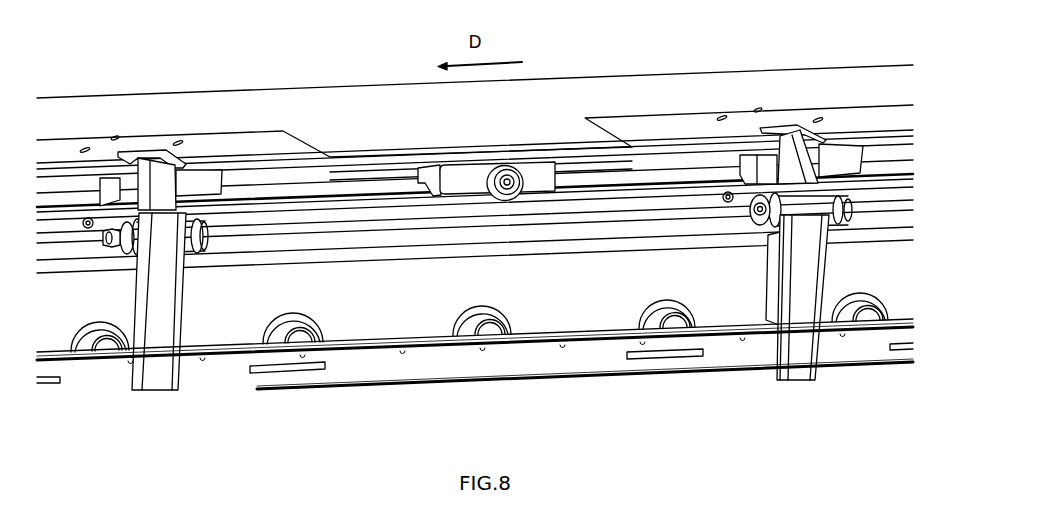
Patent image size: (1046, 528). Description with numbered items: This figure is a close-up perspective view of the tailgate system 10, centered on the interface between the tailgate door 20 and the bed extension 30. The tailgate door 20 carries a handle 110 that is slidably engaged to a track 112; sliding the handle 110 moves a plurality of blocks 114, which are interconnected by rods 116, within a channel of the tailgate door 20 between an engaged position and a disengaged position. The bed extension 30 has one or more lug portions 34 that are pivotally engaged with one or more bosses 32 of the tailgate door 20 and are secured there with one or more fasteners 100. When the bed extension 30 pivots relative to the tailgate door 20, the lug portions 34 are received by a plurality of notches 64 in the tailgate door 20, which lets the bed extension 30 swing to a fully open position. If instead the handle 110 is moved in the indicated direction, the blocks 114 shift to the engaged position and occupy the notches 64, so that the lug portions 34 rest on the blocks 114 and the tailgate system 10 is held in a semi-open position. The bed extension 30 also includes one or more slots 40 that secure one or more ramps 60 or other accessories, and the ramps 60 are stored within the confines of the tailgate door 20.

The tailgate system 10 is at (294, 60).
The tailgate door 20 is at (160, 108).
The bed extension 30 is at (538, 363).
The bosses 32 is at (133, 258).
The lug portions 34 is at (167, 312).
The slots 40 is at (283, 373).
The ramps 60 is at (475, 319).
The notches 64 is at (148, 176).
The fasteners 100 is at (107, 243).
The handle 110 is at (505, 164).
The track 112 is at (439, 163).
The blocks 114 is at (192, 178).
The rods 116 is at (345, 177).